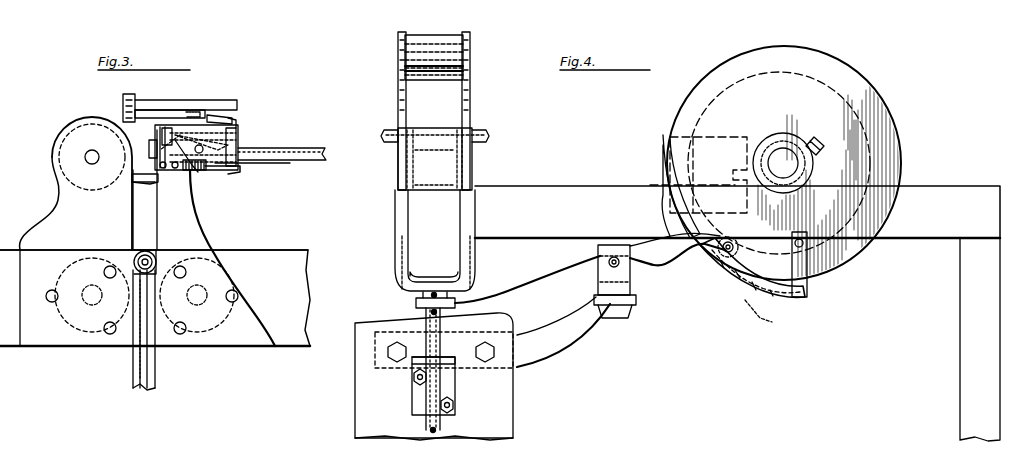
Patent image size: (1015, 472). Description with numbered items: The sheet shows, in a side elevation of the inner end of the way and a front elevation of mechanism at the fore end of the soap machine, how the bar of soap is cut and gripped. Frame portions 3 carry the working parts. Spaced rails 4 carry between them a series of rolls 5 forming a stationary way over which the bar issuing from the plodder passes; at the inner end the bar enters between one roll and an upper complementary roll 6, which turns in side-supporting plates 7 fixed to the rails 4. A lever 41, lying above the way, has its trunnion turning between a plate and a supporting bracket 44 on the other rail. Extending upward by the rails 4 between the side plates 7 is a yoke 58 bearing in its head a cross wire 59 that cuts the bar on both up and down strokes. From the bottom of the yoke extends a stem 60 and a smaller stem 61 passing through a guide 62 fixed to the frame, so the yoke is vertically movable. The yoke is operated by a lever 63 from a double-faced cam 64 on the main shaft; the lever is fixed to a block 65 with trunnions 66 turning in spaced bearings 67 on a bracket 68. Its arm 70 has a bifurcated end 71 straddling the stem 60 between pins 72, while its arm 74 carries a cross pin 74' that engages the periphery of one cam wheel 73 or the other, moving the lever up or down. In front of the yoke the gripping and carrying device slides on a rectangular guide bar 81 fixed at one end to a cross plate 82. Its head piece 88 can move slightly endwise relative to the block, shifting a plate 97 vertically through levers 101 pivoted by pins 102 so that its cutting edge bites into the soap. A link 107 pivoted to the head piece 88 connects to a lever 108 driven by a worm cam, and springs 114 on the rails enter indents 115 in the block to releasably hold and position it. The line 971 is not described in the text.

In FIG. 4, the frame portions 3 is at (737, 313).
In FIG. 3, the rails 4 is at (155, 298).
In FIG. 3, the rolls 5 is at (86, 338).
In FIG. 3, the upper complementary roll 6 is at (52, 158).
In FIG. 4, the upper complementary roll 6 is at (434, 34).
In FIG. 3, the side-supporting plates 7 is at (75, 200).
In FIG. 4, the side-supporting plates 7 is at (398, 98).
In FIG. 3, the lever 41 is at (258, 330).
In FIG. 3, the supporting bracket 44 is at (156, 183).
In FIG. 3, the yoke 58 is at (147, 388).
In FIG. 4, the yoke 58 is at (395, 230).
In FIG. 3, the cross wire 59 is at (165, 254).
In FIG. 4, the cross wire 59 is at (460, 128).
In FIG. 4, the stem 60 is at (428, 325).
In FIG. 4, the stem of less diameter 61 is at (426, 424).
In FIG. 4, the guide 62 is at (456, 386).
In FIG. 4, the lever 63 is at (563, 328).
In FIG. 4, the cam 64 is at (763, 216).
In FIG. 4, the block 65 is at (634, 275).
In FIG. 4, the trunnions 66 is at (596, 258).
In FIG. 4, the bearings 67 is at (605, 270).
In FIG. 4, the bracket 68 is at (630, 304).
In FIG. 4, the arm of the lever 70 is at (508, 288).
In FIG. 4, the bifurcated end 71 is at (420, 298).
In FIG. 4, the pins 72 is at (434, 291).
In FIG. 4, the cam wheel 73 is at (784, 163).
In FIG. 4, the arm of the lever 74 is at (747, 267).
In FIG. 4, the cross pin 74' is at (758, 319).
In FIG. 3, the guide bar 81 is at (304, 146).
In FIG. 3, the cross plate 82 is at (158, 140).
In FIG. 3, the head piece 88 is at (236, 120).
In FIG. 3, the plate 97 is at (145, 171).
In FIG. 3, the rod 971 is at (265, 162).
In FIG. 3, the levers 101 is at (212, 150).
In FIG. 3, the pins 102 is at (240, 170).
In FIG. 3, the link 107 is at (172, 116).
In FIG. 3, the lever 108 is at (222, 103).
In FIG. 3, the springs 114 is at (200, 171).
In FIG. 3, the indents 115 is at (186, 180).